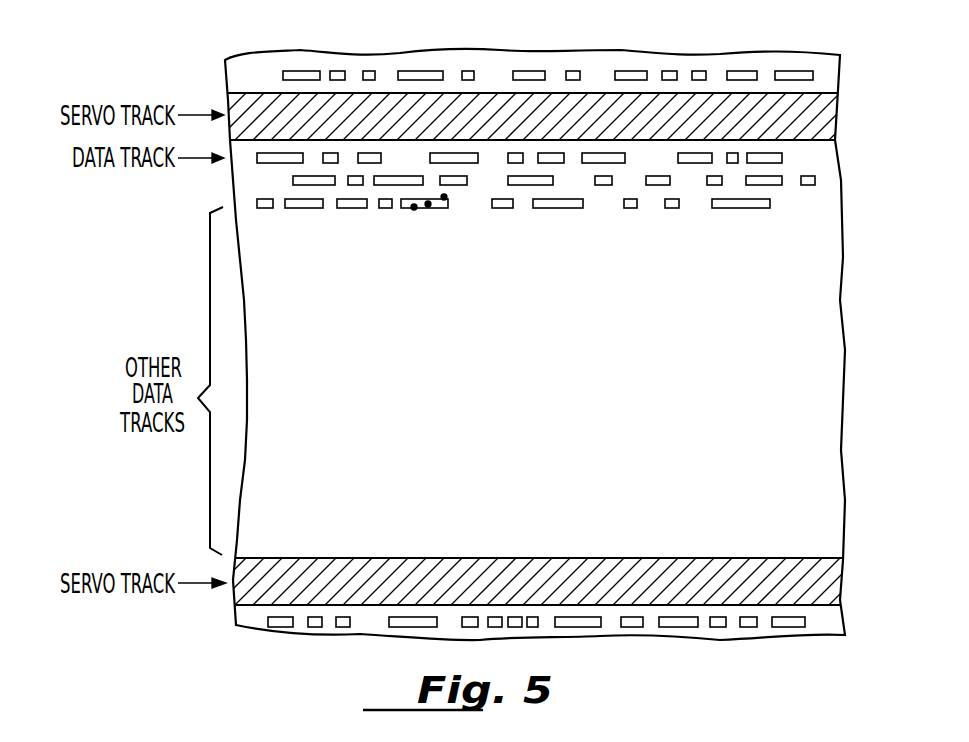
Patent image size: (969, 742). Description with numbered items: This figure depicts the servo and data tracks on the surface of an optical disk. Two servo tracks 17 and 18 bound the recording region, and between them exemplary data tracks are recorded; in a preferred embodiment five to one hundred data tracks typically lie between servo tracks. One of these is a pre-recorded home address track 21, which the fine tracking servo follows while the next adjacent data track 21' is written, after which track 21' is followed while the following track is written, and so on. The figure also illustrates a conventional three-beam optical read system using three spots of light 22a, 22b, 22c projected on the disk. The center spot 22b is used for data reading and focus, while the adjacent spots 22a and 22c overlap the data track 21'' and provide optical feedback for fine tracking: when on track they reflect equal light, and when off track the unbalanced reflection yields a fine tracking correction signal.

The servo track 17 is at (820, 120).
The servo track 18 is at (825, 583).
The pre-recorded home address track 21 is at (564, 149).
The data track 21' is at (592, 192).
The data track 21'' is at (574, 227).
The spot of light 22a is at (414, 207).
The center spot of light 22b is at (428, 204).
The spot of light 22c is at (444, 197).